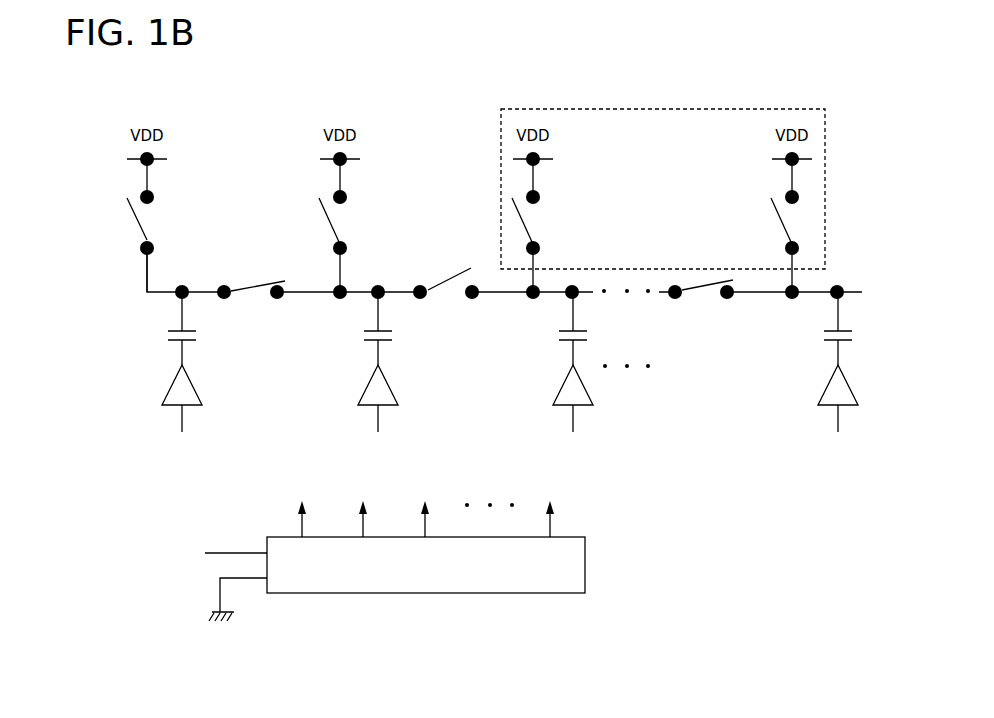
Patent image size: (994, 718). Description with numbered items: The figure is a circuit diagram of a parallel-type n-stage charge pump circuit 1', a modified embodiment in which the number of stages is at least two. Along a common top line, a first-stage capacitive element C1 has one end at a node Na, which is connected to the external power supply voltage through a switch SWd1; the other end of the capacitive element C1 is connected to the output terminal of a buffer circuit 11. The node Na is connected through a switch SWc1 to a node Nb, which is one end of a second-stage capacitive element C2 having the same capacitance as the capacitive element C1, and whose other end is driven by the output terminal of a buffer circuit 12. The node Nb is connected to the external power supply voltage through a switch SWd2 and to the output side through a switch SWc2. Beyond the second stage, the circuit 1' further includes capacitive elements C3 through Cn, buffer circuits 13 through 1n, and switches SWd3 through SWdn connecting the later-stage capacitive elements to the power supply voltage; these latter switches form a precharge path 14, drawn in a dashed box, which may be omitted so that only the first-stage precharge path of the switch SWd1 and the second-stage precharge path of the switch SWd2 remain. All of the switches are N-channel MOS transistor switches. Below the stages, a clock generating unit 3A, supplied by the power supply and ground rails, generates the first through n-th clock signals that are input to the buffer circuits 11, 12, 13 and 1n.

The charge pump circuit 1' is at (504, 204).
The precharge path 14 is at (797, 108).
The buffer circuit 11 is at (176, 385).
The buffer circuit 12 is at (373, 385).
The buffer circuit 13 is at (568, 385).
The buffer circuit 1n is at (832, 385).
The clock generating unit 3A is at (586, 551).
The capacitive element C1 is at (166, 330).
The capacitive element C2 is at (362, 331).
The capacitive element C3 is at (558, 330).
The capacitive element Cn is at (822, 330).
The switch SWd1 is at (128, 222).
The switch SWd2 is at (317, 210).
The switch SWd3 is at (528, 218).
The switch SWdn is at (771, 212).
The switch SWc1 is at (253, 282).
The switch SWc2 is at (447, 278).
The node Na is at (183, 284).
The node Nb is at (382, 285).